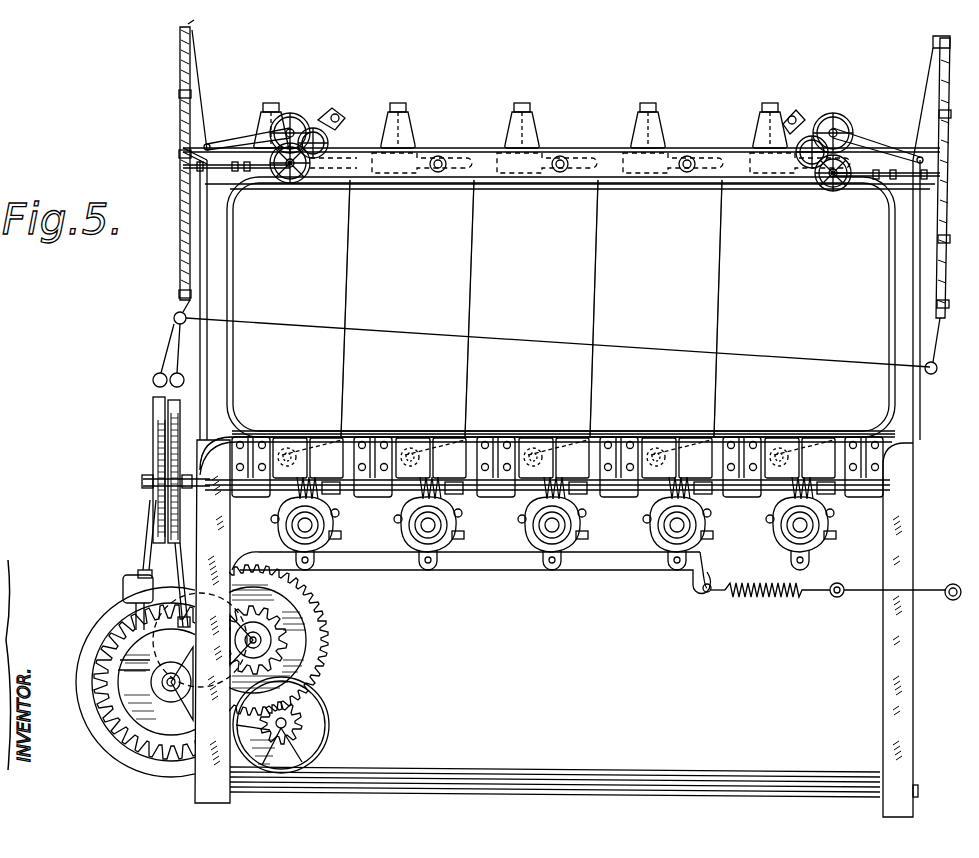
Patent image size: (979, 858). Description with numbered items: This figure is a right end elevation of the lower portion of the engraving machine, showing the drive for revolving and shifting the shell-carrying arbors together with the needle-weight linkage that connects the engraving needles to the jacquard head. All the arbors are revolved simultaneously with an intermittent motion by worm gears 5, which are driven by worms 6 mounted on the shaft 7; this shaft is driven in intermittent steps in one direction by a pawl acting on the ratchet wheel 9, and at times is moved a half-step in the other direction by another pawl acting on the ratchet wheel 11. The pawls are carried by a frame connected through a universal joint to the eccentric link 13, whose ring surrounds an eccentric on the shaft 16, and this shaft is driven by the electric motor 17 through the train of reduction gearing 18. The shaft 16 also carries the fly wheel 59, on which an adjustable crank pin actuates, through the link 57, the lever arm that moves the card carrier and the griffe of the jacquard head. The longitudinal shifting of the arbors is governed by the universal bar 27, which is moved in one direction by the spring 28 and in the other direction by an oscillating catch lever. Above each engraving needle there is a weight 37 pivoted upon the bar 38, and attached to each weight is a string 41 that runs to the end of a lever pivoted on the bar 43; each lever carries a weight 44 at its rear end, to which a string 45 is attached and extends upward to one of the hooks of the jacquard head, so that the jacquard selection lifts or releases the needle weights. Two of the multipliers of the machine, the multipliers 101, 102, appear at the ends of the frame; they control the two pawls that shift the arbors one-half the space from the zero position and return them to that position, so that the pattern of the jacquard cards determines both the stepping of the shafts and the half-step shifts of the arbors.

The worm gears 5 is at (783, 537).
The worms 6 is at (462, 503).
The shaft 7 is at (652, 498).
The ratchet wheel 9 is at (208, 440).
The ratchet wheel 11 is at (153, 467).
The eccentric link 13 is at (180, 543).
The shaft 16 is at (168, 680).
The electric motor 17 is at (322, 703).
The train of reduction gearing 18 is at (322, 623).
The universal bar 27 is at (535, 568).
The spring 28 is at (777, 600).
The weight 37 is at (714, 437).
The bar 38 is at (540, 450).
The string 41 is at (720, 278).
The bar 43 is at (689, 172).
The weight 44 is at (662, 176).
The string 45 is at (771, 105).
The link 57 is at (143, 500).
The fly wheel 59 is at (82, 650).
The multiplier 101 is at (815, 188).
The multiplier 102 is at (318, 182).